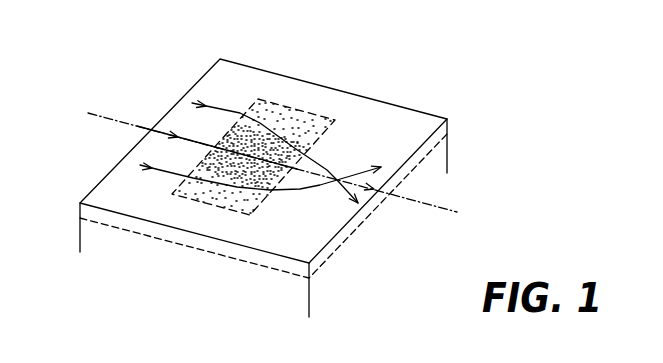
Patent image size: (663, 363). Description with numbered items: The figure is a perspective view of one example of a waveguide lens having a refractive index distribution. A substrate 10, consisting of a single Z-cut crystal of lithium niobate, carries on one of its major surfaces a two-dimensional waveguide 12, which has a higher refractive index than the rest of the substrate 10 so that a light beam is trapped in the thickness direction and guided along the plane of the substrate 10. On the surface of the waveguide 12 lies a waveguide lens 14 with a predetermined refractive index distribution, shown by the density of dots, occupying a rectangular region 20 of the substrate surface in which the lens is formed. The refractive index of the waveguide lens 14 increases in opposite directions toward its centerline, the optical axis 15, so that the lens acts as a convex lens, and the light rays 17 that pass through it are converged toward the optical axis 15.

The substrate 10 is at (88, 237).
The two-dimensional waveguide 12 is at (75, 215).
The waveguide lens 14 is at (256, 82).
The centerline (optical axis) 15 is at (137, 123).
The light rays 17 is at (226, 111).
The rectangular region 20 is at (324, 113).